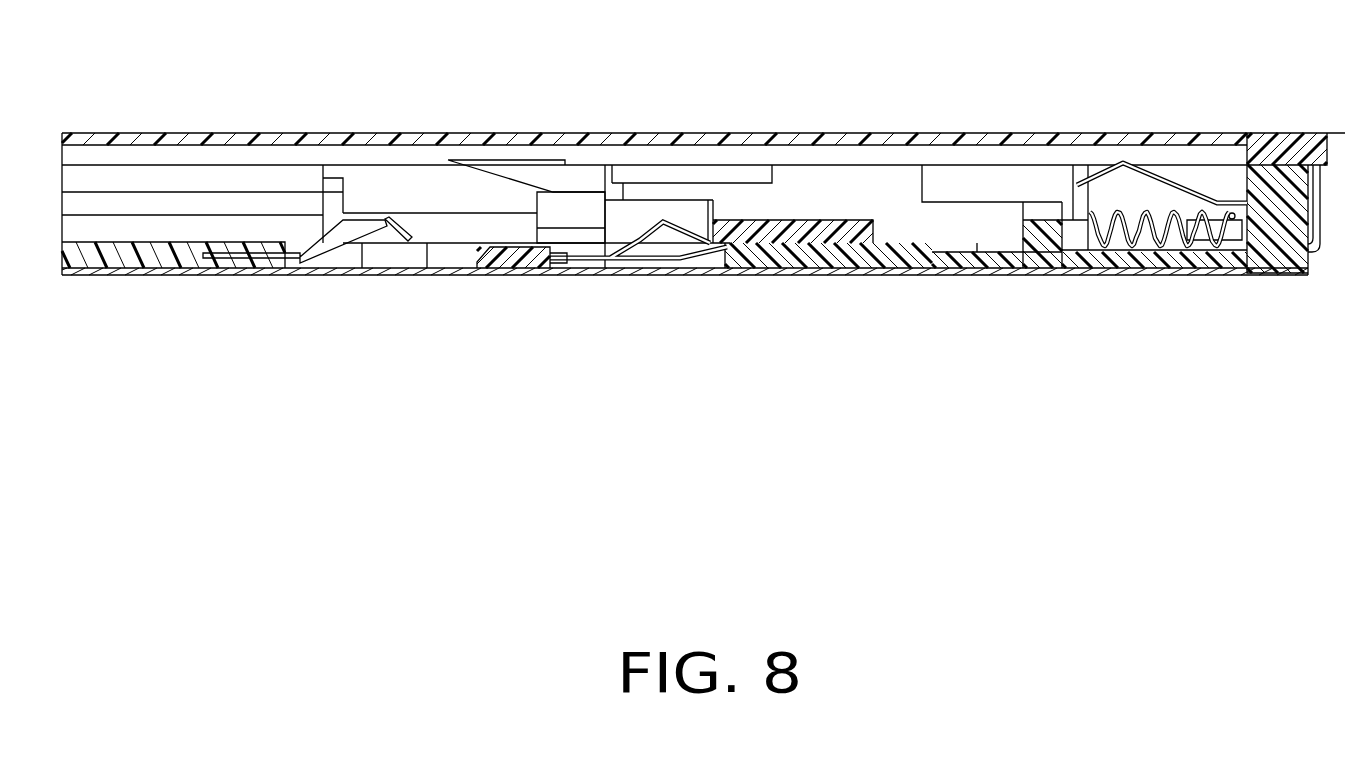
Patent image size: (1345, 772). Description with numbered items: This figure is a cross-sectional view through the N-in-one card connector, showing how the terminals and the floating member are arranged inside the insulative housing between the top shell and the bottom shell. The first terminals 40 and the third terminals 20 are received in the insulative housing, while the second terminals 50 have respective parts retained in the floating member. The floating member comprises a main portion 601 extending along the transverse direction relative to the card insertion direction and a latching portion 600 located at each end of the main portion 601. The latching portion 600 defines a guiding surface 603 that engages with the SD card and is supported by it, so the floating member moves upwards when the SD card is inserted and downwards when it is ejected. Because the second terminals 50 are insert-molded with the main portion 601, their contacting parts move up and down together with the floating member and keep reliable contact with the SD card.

The third terminals 20 is at (397, 222).
The first terminals 40 is at (1133, 168).
The second terminals 50 is at (662, 223).
The latching portion 600 is at (578, 210).
The main portion 601 is at (512, 257).
The guiding surface 603 is at (503, 178).